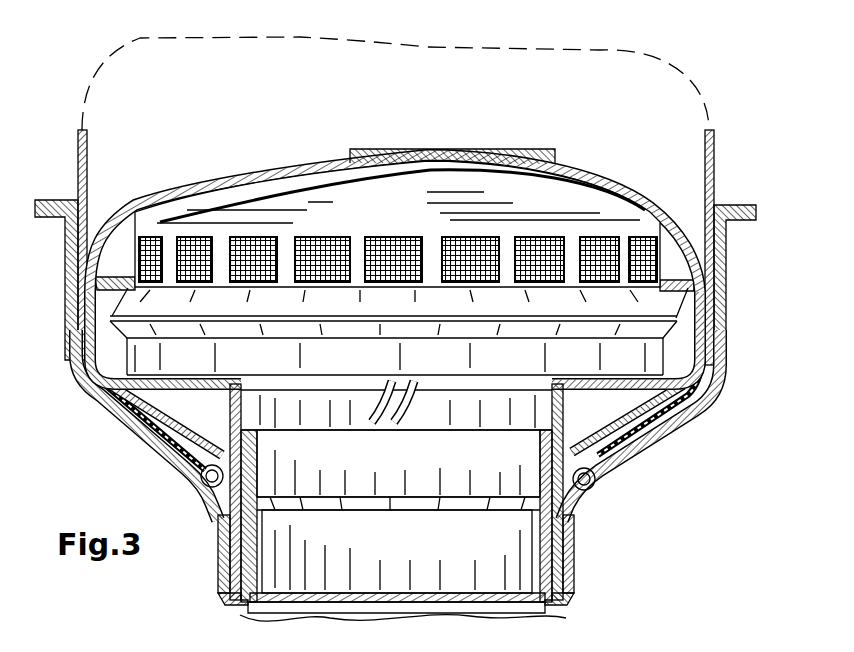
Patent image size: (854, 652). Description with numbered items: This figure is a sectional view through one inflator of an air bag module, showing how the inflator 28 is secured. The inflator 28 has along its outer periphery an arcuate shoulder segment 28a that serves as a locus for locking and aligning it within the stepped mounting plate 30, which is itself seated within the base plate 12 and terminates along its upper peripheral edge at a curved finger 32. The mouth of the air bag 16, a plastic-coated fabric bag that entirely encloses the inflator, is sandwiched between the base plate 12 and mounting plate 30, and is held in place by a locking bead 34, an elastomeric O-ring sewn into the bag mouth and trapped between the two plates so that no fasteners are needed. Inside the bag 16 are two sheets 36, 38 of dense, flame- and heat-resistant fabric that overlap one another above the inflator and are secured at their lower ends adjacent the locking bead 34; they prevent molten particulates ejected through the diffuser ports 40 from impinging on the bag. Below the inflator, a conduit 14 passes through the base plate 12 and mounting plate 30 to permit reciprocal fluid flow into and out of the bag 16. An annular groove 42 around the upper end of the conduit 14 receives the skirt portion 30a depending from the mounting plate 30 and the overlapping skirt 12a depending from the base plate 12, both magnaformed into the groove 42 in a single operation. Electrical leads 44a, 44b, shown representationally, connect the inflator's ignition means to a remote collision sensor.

The base plate 12 is at (725, 290).
The skirt 12a is at (566, 547).
The conduit member 14 is at (557, 604).
The air bag 16 is at (717, 170).
The inflator device 28 is at (285, 200).
The arcuate shoulder segment 28a is at (330, 323).
The mounting plate 30 is at (103, 340).
The skirt portion 30a is at (560, 589).
The curved finger 32 is at (118, 290).
The locking bead 34 is at (575, 478).
The sheet 36 is at (170, 186).
The sheet 38 is at (520, 163).
The diffuser ports 40 is at (398, 257).
The annular groove 42 is at (403, 545).
The electrical lead 44a is at (377, 398).
The electrical lead 44b is at (415, 395).